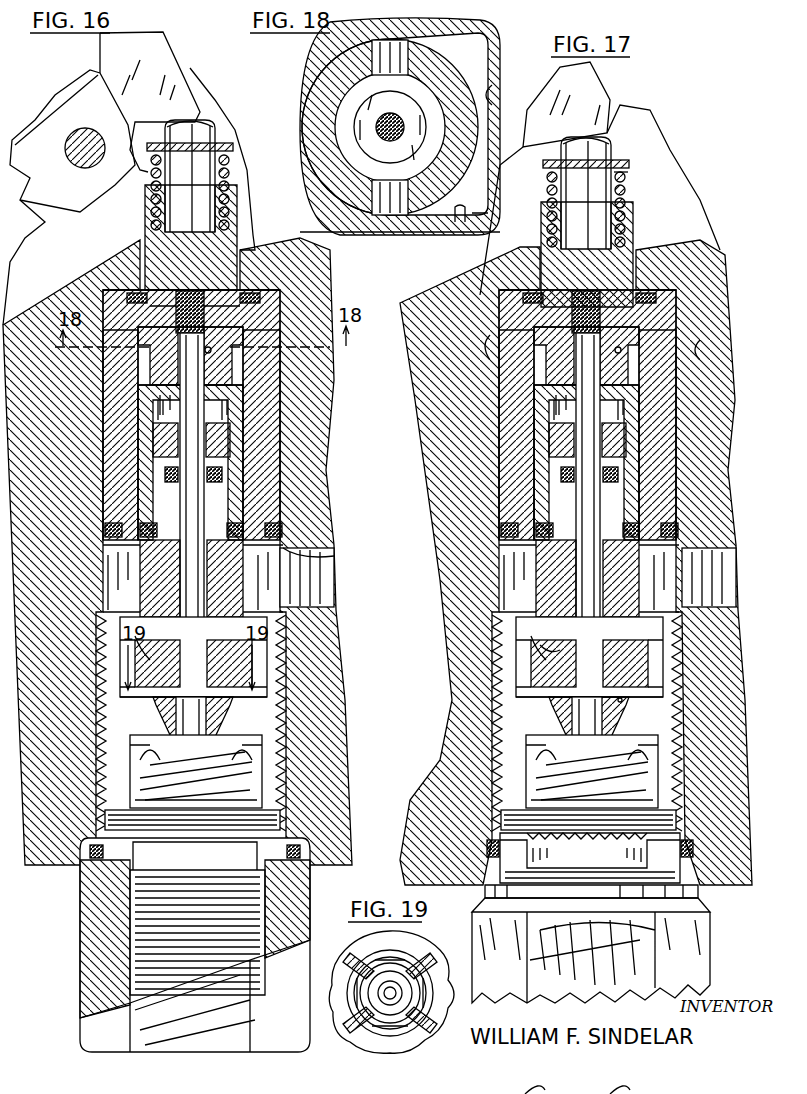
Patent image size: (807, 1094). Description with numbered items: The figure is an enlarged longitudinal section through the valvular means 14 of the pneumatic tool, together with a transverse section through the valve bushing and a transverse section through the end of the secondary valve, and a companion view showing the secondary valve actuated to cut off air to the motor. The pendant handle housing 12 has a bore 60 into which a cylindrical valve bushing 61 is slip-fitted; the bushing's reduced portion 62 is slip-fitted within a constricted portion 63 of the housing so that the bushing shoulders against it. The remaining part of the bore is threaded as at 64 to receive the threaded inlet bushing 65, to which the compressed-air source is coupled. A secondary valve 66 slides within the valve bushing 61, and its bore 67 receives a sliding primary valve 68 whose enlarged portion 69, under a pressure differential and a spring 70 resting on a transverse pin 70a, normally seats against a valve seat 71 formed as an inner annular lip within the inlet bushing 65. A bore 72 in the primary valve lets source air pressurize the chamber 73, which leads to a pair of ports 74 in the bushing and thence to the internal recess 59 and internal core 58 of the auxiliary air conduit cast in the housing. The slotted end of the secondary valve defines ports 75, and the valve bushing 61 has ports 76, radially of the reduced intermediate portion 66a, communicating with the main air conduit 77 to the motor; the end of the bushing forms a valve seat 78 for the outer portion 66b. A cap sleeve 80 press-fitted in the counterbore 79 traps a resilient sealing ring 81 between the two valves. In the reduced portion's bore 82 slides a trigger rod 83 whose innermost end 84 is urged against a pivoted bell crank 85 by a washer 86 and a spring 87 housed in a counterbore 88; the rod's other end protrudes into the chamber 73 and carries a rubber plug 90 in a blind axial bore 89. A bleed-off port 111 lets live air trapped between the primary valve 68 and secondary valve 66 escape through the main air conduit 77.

In FIG. 16, the pendant handle housing 12 is at (45, 790).
In FIG. 17, the pendant handle housing 12 is at (432, 790).
In FIG. 18, the pendant handle housing 12 is at (512, 60).
In FIG. 16, the valvular means 14 is at (300, 534).
In FIG. 17, the valvular means 14 is at (692, 540).
In FIG. 18, the valvular means 14 is at (430, 220).
In FIG. 18, the internal core 58 is at (462, 210).
In FIG. 17, the internal recess 59 is at (490, 352).
In FIG. 18, the internal recess 59 is at (498, 88).
In FIG. 16, the bore 60 is at (212, 406).
In FIG. 17, the bore 60 is at (640, 412).
In FIG. 16, the cylindrical valve bushing 61 is at (232, 447).
In FIG. 17, the cylindrical valve bushing 61 is at (666, 435).
In FIG. 18, the cylindrical valve bushing 61 is at (345, 63).
In FIG. 16, the reduced portion 62 is at (270, 287).
In FIG. 17, the reduced portion 62 is at (656, 268).
In FIG. 16, the constricted portion 63 is at (252, 263).
In FIG. 17, the constricted portion 63 is at (648, 252).
In FIG. 16, the threaded portion 64 is at (222, 712).
In FIG. 17, the threaded portion 64 is at (624, 702).
In FIG. 16, the threaded inlet bushing 65 is at (85, 948).
In FIG. 17, the threaded inlet bushing 65 is at (715, 958).
In FIG. 19, the threaded inlet bushing 65 is at (362, 1048).
In FIG. 16, the secondary valve 66 is at (262, 489).
In FIG. 17, the secondary valve 66 is at (632, 475).
In FIG. 16, the reduced intermediate portion 66a is at (300, 552).
In FIG. 17, the outer portion 66b is at (560, 652).
In FIG. 16, the bore 67 is at (202, 508).
In FIG. 17, the bore 67 is at (592, 513).
In FIG. 16, the primary valve 68 is at (192, 660).
In FIG. 17, the primary valve 68 is at (589, 657).
In FIG. 19, the primary valve 68 is at (386, 1022).
In FIG. 16, the enlarged portion 69 is at (160, 766).
In FIG. 17, the enlarged portion 69 is at (556, 766).
In FIG. 19, the enlarged portion 69 is at (418, 965).
In FIG. 16, the spring 70 is at (260, 782).
In FIG. 17, the spring 70 is at (642, 792).
In FIG. 19, the spring 70 is at (390, 993).
In FIG. 16, the transverse pin 70a is at (284, 822).
In FIG. 17, the transverse pin 70a is at (738, 882).
In FIG. 16, the valve seat 71 is at (207, 737).
In FIG. 17, the valve seat 71 is at (642, 710).
In FIG. 16, the bore 72 is at (211, 350).
In FIG. 16, the chamber 73 is at (150, 372).
In FIG. 17, the chamber 73 is at (640, 334).
In FIG. 16, the ports 74 is at (206, 312).
In FIG. 18, the ports 74 is at (392, 207).
In FIG. 16, the ports 75 is at (258, 690).
In FIG. 17, the ports 75 is at (626, 652).
In FIG. 19, the ports 75 is at (398, 1005).
In FIG. 16, the ports 76 is at (300, 590).
In FIG. 17, the ports 76 is at (697, 580).
In FIG. 16, the main air conduit 77 is at (292, 608).
In FIG. 17, the main air conduit 77 is at (700, 600).
In FIG. 16, the valve seat 78 is at (292, 636).
In FIG. 17, the valve seat 78 is at (690, 630).
In FIG. 16, the counterbore 79 is at (215, 390).
In FIG. 17, the counterbore 79 is at (612, 372).
In FIG. 16, the cap sleeve 80 is at (225, 432).
In FIG. 17, the cap sleeve 80 is at (622, 396).
In FIG. 16, the resilient sealing ring 81 is at (216, 474).
In FIG. 17, the resilient sealing ring 81 is at (620, 452).
In FIG. 16, the bore 82 is at (168, 240).
In FIG. 17, the bore 82 is at (587, 254).
In FIG. 16, the trigger rod 83 is at (203, 195).
In FIG. 17, the trigger rod 83 is at (599, 210).
In FIG. 18, the trigger rod 83 is at (424, 99).
In FIG. 16, the innermost end 84 is at (208, 123).
In FIG. 17, the innermost end 84 is at (611, 140).
In FIG. 16, the pivoted bell crank 85 is at (165, 57).
In FIG. 17, the pivoted bell crank 85 is at (586, 92).
In FIG. 16, the washer 86 is at (228, 145).
In FIG. 17, the washer 86 is at (635, 162).
In FIG. 16, the spring 87 is at (125, 150).
In FIG. 17, the spring 87 is at (630, 173).
In FIG. 16, the counterbore 88 is at (160, 195).
In FIG. 17, the counterbore 88 is at (626, 212).
In FIG. 17, the blind axial bore 89 is at (621, 351).
In FIG. 16, the rubber plug 90 is at (206, 302).
In FIG. 17, the rubber plug 90 is at (602, 303).
In FIG. 18, the rubber plug 90 is at (380, 118).
In FIG. 16, the bleed-off port 111 is at (140, 640).
In FIG. 17, the bleed-off port 111 is at (536, 626).